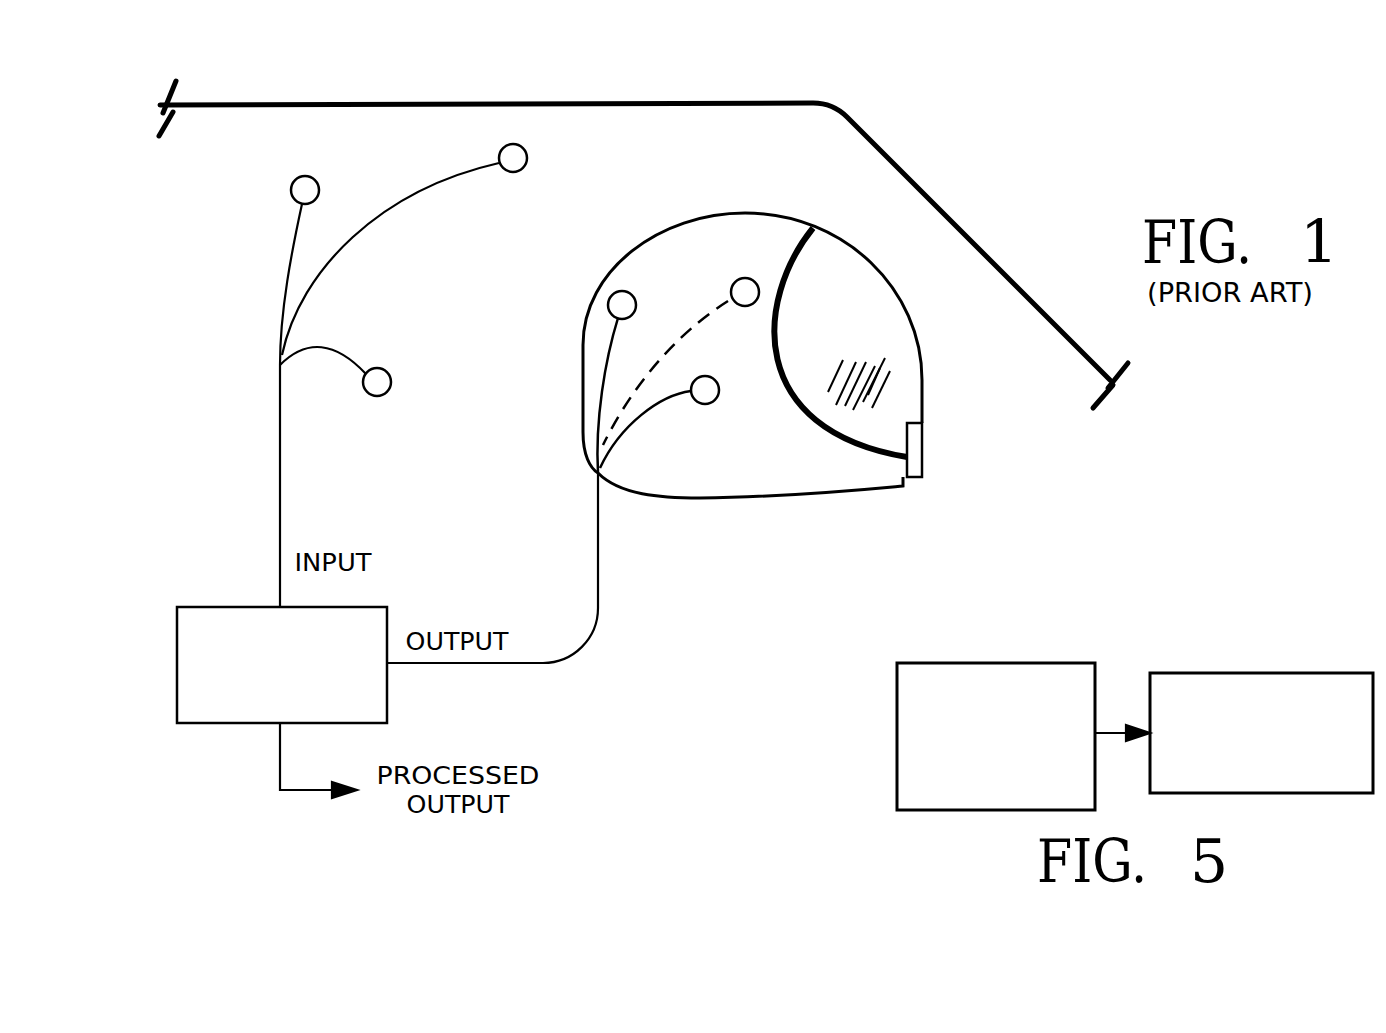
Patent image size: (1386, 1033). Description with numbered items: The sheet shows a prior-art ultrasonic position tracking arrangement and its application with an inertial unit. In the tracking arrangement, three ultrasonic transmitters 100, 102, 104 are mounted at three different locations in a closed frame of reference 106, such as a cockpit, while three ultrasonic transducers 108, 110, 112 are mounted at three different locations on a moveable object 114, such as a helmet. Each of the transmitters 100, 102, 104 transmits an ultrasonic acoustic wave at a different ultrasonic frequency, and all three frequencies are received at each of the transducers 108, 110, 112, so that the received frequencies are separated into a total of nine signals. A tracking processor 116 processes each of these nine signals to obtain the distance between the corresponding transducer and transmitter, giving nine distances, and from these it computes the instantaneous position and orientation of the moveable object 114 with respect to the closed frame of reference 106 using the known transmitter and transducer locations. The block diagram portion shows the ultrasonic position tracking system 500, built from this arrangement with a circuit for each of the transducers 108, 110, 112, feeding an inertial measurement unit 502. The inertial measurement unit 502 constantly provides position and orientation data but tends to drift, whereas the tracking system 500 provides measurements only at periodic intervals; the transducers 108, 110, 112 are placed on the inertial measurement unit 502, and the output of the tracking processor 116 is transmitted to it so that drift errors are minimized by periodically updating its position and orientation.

In FIG. 1, the ultrasonic transmitter 100 is at (310, 176).
In FIG. 1, the ultrasonic transmitter 102 is at (517, 144).
In FIG. 1, the ultrasonic transmitter 104 is at (390, 388).
In FIG. 1, the closed frame of reference 106 is at (943, 188).
In FIG. 1, the ultrasonic transducer 108 is at (608, 300).
In FIG. 1, the ultrasonic transducer 110 is at (747, 278).
In FIG. 1, the ultrasonic transducer 112 is at (707, 404).
In FIG. 1, the moveable object 114 is at (907, 402).
In FIG. 1, the tracking processor 116 is at (220, 607).
In FIG. 5, the ultrasonic position tracking system 500 is at (1033, 662).
In FIG. 5, the inertial measurement unit 502 is at (1302, 672).